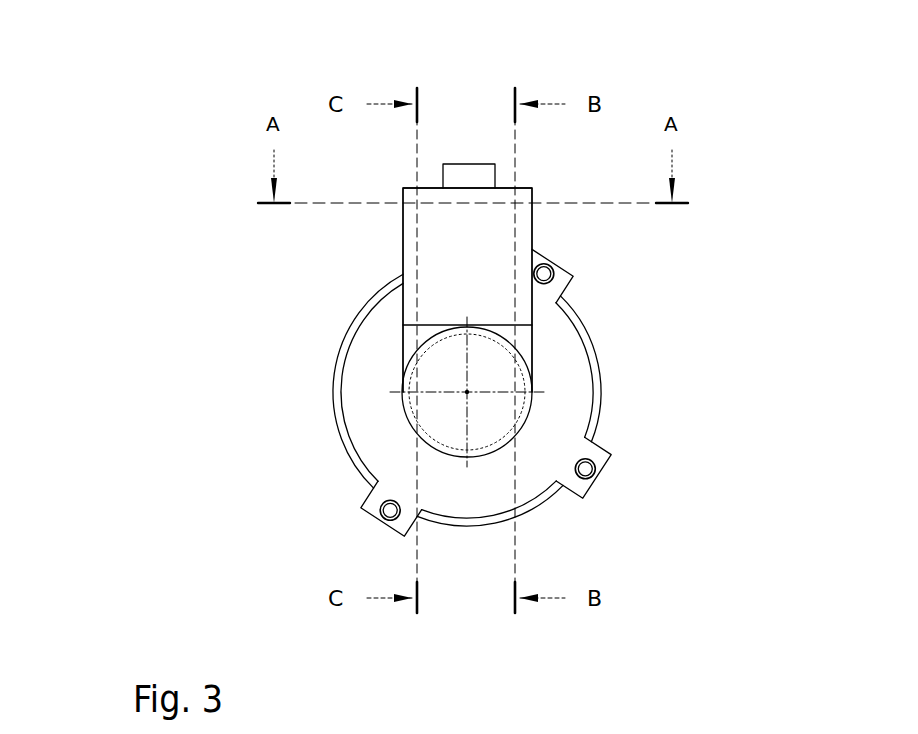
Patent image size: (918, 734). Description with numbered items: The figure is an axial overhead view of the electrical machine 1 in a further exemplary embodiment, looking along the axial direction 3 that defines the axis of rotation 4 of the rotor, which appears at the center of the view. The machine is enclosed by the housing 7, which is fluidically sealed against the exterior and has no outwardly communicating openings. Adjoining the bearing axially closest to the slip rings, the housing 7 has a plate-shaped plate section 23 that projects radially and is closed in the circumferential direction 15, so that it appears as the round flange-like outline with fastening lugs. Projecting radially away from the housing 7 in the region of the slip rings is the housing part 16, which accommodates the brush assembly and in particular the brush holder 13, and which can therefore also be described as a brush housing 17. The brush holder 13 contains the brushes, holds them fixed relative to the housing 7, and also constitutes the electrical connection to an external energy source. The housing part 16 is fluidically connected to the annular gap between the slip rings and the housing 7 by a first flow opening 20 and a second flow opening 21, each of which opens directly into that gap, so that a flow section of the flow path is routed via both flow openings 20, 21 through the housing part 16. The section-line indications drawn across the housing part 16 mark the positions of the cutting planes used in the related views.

The electrical machine 1 is at (118, 130).
The axial direction 3 is at (467, 392).
The axis of rotation 4 is at (467, 392).
The housing 7 is at (278, 400).
The brush holder 13 is at (472, 155).
The circumferential direction 15 is at (686, 300).
The housing part 16 is at (398, 252).
The brush housing 17 is at (467, 290).
The first flow opening 20 is at (588, 293).
The second flow opening 21 is at (548, 328).
The plate section 23 is at (578, 385).